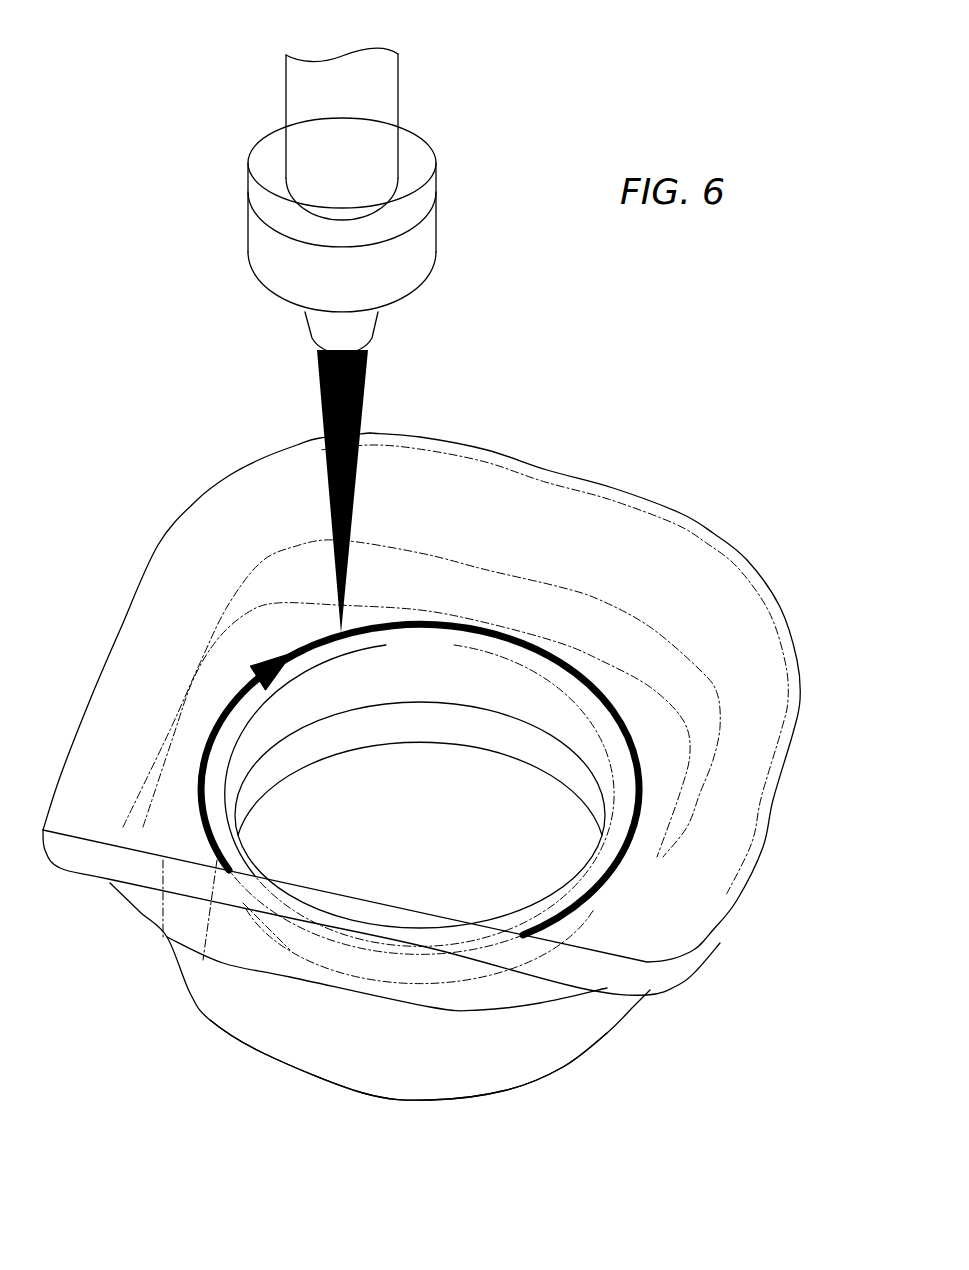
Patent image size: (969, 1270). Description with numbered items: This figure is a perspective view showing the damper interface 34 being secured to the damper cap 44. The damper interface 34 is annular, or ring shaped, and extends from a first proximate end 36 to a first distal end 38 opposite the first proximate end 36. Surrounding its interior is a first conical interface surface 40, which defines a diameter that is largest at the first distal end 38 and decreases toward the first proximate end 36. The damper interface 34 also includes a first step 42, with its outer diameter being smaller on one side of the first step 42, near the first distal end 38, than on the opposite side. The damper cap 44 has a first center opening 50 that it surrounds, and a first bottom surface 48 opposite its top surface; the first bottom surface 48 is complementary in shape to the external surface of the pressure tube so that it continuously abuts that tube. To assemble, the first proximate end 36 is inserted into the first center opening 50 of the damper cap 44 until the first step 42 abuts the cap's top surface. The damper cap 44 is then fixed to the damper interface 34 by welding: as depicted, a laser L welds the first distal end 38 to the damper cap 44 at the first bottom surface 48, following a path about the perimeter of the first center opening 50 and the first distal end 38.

The laser L is at (300, 100).
The damper interface 34 is at (263, 1033).
The first proximate end 36 is at (493, 647).
The first distal end 38 is at (508, 1088).
The first conical interface surface 40 is at (438, 725).
The first step 42 is at (298, 853).
The damper cap 44 is at (757, 742).
The first bottom surface 48 is at (737, 817).
The first center opening 50 is at (300, 647).